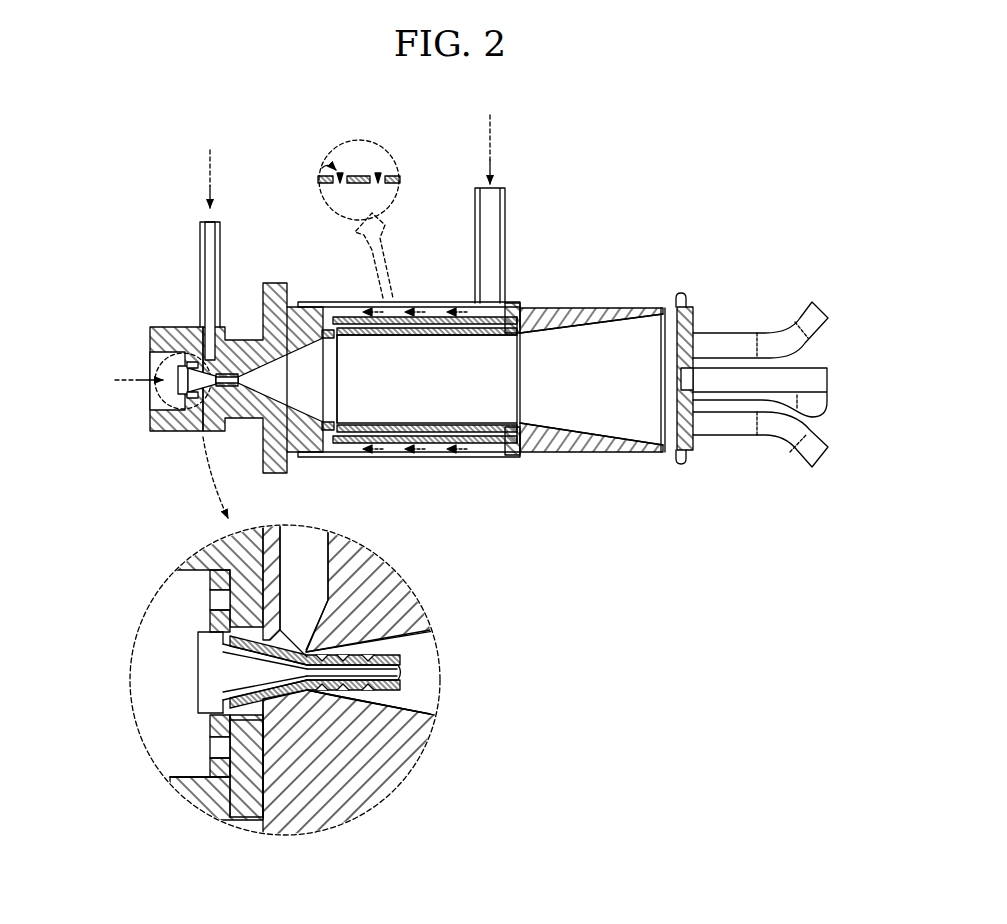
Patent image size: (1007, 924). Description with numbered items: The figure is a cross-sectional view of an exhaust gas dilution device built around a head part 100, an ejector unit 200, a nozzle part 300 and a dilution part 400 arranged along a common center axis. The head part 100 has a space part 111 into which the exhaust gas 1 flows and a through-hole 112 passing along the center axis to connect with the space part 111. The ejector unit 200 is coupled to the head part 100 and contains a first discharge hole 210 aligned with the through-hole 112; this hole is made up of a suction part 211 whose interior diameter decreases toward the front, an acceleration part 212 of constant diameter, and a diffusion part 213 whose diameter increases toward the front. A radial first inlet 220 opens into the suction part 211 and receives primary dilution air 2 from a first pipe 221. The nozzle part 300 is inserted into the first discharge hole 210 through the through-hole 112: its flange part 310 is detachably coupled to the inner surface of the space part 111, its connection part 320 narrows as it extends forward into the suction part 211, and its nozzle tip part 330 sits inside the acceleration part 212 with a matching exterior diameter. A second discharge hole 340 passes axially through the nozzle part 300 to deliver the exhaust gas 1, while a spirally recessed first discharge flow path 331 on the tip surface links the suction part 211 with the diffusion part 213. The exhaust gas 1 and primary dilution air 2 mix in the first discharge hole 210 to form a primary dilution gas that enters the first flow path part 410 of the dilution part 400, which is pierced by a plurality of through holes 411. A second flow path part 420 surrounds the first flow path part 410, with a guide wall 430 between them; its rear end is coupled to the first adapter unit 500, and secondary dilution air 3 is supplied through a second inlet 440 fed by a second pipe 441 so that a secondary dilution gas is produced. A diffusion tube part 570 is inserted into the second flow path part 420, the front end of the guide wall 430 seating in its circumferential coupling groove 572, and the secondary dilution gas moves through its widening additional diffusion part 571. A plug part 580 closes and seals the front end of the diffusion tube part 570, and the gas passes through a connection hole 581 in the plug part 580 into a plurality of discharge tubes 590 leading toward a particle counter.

The exhaust gas 1 is at (136, 378).
The primary dilution air 2 is at (207, 182).
The secondary dilution air 3 is at (487, 152).
The head part 100 is at (160, 325).
The space part 111 is at (155, 640).
The through-hole 112 is at (196, 793).
The ejector unit 200 is at (268, 292).
The first discharge hole 210 is at (387, 860).
The suction part 211 is at (293, 723).
The acceleration part 212 is at (350, 723).
The diffusion part 213 is at (393, 740).
The first inlet 220 is at (281, 578).
The first pipe 221 is at (200, 242).
The nozzle part 300 is at (186, 716).
The flange part 310 is at (190, 789).
The connection part 320 is at (248, 792).
The nozzle tip part 330 is at (420, 658).
The first discharge flow path 331 is at (425, 688).
The second discharge hole 340 is at (197, 674).
The dilution part 400 is at (333, 297).
The first flow path part 410 is at (358, 175).
The through holes 411 is at (330, 172).
The second flow path part 420 is at (498, 443).
The guide wall 430 is at (425, 437).
The second inlet 440 is at (515, 304).
The second pipe 441 is at (507, 210).
The first adapter unit 500 is at (292, 290).
The diffusion tube part 570 is at (610, 300).
The additional diffusion part 571 is at (590, 306).
The coupling groove 572 is at (528, 446).
The plug part 580 is at (692, 452).
The connection hole 581 is at (675, 385).
The discharge tube 590 is at (732, 333).